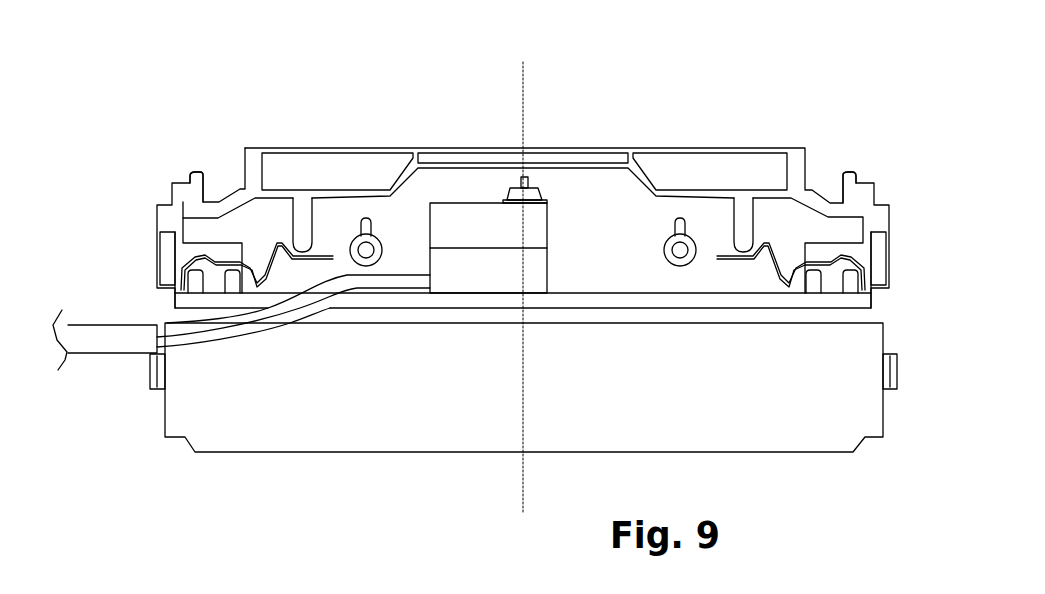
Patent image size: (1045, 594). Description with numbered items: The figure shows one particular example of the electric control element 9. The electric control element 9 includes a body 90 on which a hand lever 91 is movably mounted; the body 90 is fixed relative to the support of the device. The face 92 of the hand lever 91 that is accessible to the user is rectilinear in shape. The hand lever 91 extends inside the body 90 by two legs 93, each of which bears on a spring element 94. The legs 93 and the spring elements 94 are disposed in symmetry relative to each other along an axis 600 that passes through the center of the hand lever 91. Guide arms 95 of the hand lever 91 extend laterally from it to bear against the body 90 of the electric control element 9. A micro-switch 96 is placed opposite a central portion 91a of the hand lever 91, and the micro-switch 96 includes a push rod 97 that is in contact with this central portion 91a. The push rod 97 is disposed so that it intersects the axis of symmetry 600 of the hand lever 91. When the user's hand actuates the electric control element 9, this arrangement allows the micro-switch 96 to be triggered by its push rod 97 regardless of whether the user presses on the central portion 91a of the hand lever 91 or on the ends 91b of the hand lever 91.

The electric control element 9 is at (167, 109).
The body 90 is at (727, 300).
The hand lever 91 is at (631, 118).
The central portion 91a is at (488, 148).
The ends 91b is at (255, 148).
The face 92 is at (363, 148).
The legs 93 is at (305, 242).
The spring element 94 is at (207, 252).
The guide arms 95 is at (198, 208).
The micro-switch 96 is at (473, 270).
The push rod 97 is at (528, 182).
The axis of symmetry 600 is at (525, 83).